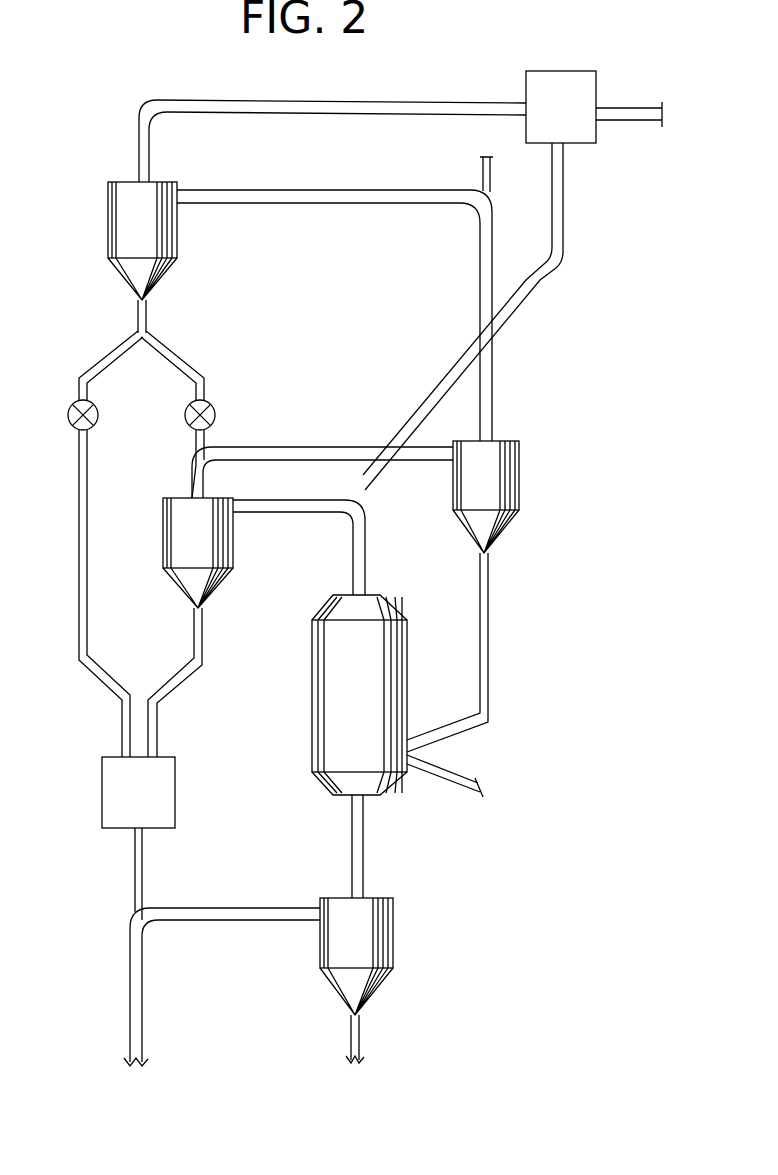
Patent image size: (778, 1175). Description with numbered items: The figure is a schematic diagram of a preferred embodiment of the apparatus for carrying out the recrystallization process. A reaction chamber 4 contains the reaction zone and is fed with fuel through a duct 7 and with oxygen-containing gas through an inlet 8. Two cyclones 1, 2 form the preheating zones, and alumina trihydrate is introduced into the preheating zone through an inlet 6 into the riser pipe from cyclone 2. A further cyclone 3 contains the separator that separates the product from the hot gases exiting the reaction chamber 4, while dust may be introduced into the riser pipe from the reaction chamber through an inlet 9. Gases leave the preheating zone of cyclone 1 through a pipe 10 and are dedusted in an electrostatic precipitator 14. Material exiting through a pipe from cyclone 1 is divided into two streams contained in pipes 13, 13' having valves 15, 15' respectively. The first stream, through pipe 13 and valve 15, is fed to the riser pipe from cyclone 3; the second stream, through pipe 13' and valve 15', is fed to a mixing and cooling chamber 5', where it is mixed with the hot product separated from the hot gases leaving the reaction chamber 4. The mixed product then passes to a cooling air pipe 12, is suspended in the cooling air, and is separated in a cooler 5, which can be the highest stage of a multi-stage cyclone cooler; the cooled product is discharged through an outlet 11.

The cyclone 1 is at (123, 216).
The cyclone 2 is at (500, 477).
The cyclone 3 is at (185, 531).
The reaction chamber 4 is at (335, 678).
The cooler 5 is at (375, 956).
The mixing and cooling chamber 5' is at (107, 792).
The inlet 6 is at (491, 180).
The duct 7 is at (470, 783).
The inlet 8 is at (358, 860).
The inlet 9 is at (522, 298).
The pipe 10 is at (287, 101).
The outlet 11 is at (360, 1038).
The cooling air pipe 12 is at (135, 1003).
The pipe 13 is at (176, 363).
The pipe 13' is at (99, 362).
The electrostatic precipitator 14 is at (585, 83).
The valve 15 is at (225, 413).
The valve 15' is at (53, 425).